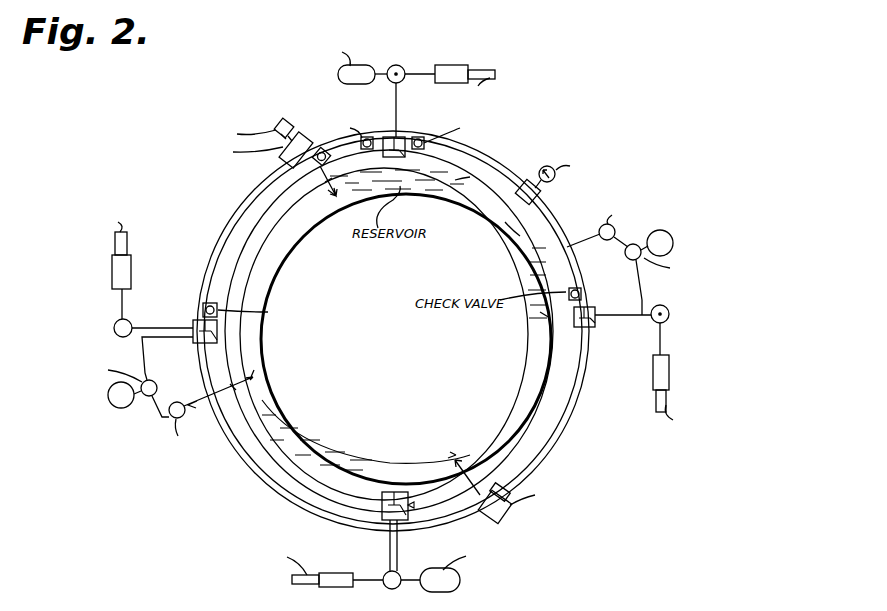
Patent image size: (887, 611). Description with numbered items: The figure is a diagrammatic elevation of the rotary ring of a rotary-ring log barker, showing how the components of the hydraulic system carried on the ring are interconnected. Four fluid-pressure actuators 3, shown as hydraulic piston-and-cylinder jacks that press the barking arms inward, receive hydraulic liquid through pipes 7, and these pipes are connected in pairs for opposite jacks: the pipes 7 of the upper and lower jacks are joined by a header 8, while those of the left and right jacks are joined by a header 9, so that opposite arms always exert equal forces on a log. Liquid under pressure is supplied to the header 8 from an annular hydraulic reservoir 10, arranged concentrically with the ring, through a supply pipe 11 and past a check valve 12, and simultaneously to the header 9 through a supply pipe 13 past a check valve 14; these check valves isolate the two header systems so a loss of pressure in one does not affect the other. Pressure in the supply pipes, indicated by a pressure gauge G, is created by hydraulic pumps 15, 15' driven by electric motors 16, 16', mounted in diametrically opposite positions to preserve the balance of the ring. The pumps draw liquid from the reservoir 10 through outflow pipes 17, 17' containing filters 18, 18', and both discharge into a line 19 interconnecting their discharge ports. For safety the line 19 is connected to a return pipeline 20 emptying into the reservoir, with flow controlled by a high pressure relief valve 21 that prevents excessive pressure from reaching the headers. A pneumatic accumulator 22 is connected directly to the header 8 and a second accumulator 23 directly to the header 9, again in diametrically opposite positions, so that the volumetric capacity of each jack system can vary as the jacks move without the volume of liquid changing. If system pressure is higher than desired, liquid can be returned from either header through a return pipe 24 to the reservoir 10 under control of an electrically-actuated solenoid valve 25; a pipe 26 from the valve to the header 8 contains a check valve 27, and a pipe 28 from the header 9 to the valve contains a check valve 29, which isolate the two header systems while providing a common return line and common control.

The fluid-pressure actuator 3 is at (462, 66).
The pipes 7 is at (416, 70).
The header 8 is at (246, 240).
The header 9 is at (210, 353).
The annular hydraulic reservoir 10 is at (298, 420).
The supply pipe 11 is at (460, 167).
The check valve 12 is at (428, 147).
The supply pipe 13 is at (515, 228).
The check valve 14 is at (548, 318).
The hydraulic pump 15 is at (672, 276).
The hydraulic pump 15' is at (101, 366).
The electric motor 16 is at (680, 243).
The electric motor 16' is at (108, 406).
The outflow pipe 17 is at (589, 248).
The outflow pipe 17' is at (219, 389).
The filter 18 is at (599, 220).
The filter 18' is at (160, 424).
The line 19 is at (240, 206).
The return pipeline 20 is at (468, 486).
The high pressure relief valve 21 is at (510, 492).
The accumulator 22 is at (340, 78).
The accumulator 23 is at (460, 582).
The return pipe 24 is at (318, 198).
The solenoid valve 25 is at (182, 145).
The pipe 26 is at (343, 146).
The check valve 27 is at (396, 118).
The pipe 28 is at (224, 254).
The check valve 29 is at (202, 312).
The pressure gauge G is at (556, 177).